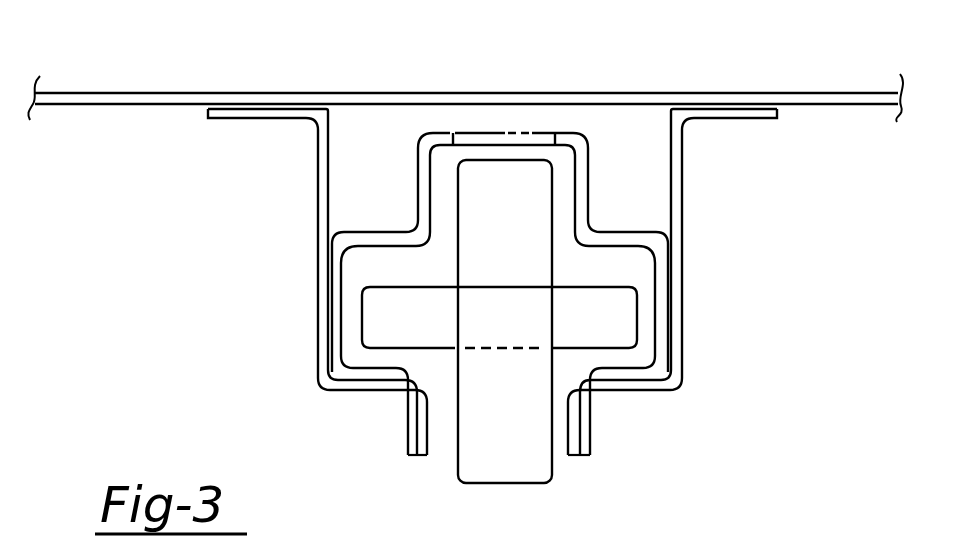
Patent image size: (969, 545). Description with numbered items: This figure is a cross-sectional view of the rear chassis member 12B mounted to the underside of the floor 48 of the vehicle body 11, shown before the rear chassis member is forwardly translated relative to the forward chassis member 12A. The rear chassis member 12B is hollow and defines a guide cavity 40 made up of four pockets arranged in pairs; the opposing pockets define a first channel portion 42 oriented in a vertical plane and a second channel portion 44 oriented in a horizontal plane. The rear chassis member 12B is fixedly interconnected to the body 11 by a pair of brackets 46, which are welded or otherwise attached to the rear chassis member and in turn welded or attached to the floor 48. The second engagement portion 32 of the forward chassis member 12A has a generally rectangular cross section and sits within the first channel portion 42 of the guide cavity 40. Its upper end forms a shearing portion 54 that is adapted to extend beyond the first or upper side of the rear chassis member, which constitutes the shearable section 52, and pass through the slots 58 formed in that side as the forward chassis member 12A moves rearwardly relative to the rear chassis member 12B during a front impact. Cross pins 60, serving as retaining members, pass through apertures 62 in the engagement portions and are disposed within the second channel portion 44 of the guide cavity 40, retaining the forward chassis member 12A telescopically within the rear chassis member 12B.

The vehicle body 11 is at (151, 78).
The forward chassis member 12A is at (445, 253).
The rear chassis member 12B is at (604, 220).
The second engagement portion 32 is at (458, 178).
The guide cavity 40 is at (642, 268).
The first channel portion 42 is at (566, 186).
The second channel portion 44 is at (642, 358).
The brackets 46 is at (316, 205).
The floor 48 is at (783, 98).
The shearable section 52 is at (563, 140).
The shearing portion 54 is at (490, 158).
The slots 58 is at (557, 142).
The cross pins 60 is at (387, 340).
The apertures 62 is at (493, 295).